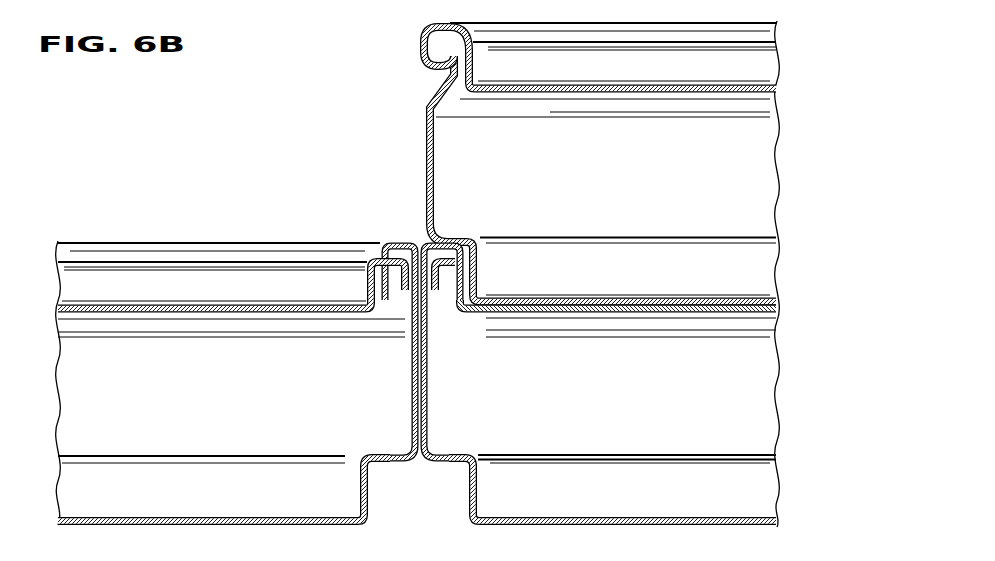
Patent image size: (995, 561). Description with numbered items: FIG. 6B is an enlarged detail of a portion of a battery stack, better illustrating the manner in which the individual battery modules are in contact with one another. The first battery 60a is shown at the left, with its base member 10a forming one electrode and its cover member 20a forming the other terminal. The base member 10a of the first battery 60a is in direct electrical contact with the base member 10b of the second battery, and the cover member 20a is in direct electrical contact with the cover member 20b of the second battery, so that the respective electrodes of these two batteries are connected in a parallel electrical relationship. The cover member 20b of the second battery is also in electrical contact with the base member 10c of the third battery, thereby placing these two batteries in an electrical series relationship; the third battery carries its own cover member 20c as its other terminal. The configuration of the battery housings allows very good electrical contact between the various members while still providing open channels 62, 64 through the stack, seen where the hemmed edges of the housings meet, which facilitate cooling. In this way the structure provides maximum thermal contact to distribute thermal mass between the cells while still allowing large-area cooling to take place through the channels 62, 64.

The base member of the first battery 10a is at (201, 504).
The base member of the second battery 10b is at (618, 504).
The base member of the third battery 10c is at (683, 282).
The cover member of the first battery 20a is at (146, 305).
The cover member of the second battery 20b is at (645, 298).
The cover member of the third battery 20c is at (649, 85).
The first battery 60a is at (66, 371).
The open channel 62 is at (407, 504).
The open channel 64 is at (408, 316).